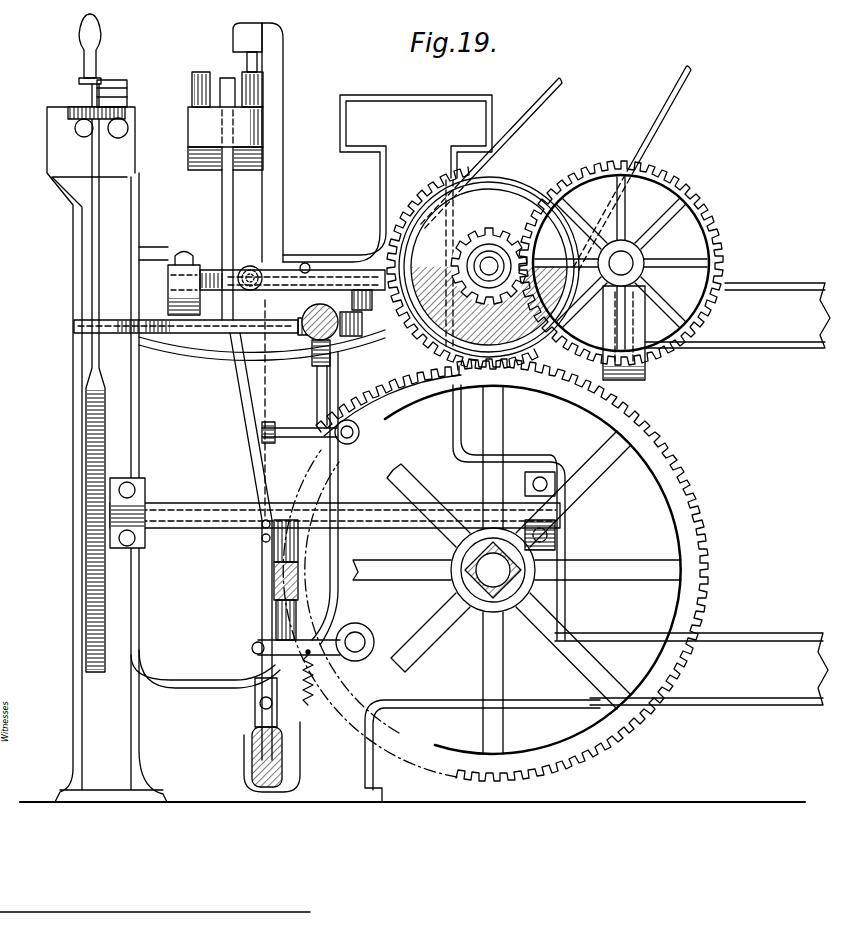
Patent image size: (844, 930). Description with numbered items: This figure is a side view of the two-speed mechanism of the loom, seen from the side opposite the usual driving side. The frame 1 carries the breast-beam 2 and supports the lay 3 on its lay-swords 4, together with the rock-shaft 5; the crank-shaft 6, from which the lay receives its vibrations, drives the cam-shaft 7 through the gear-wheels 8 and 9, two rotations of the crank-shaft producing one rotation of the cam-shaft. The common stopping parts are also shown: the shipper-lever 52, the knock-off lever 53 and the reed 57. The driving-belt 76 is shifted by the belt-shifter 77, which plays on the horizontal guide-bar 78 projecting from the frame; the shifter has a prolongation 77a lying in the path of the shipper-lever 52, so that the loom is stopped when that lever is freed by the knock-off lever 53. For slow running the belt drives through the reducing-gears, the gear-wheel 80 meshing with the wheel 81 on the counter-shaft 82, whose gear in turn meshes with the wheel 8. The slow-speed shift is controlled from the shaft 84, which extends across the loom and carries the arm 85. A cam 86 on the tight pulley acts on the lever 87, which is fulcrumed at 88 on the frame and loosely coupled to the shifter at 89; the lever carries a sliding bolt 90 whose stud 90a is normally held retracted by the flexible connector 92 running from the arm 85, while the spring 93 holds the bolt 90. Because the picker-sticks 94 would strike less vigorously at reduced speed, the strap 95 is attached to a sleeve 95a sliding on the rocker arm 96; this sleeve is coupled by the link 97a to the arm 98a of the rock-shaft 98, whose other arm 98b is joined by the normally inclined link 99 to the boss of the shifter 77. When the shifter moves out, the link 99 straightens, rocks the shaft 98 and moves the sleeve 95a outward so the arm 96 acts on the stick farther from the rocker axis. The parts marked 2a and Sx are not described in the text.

The frame 1 is at (400, 96).
The breast-beam 2 is at (47, 133).
The collar 2a is at (80, 110).
The lay 3 is at (225, 138).
The lay-swords 4 is at (284, 192).
The rock-shaft 5 is at (296, 776).
The crank-shaft 6 is at (489, 266).
The cam-shaft 7 is at (493, 570).
The gear-wheel 8 is at (530, 171).
The gear-wheel 9 is at (705, 530).
The shipper-lever 52 is at (80, 50).
The knock-off lever 53 is at (128, 120).
The reed 57 is at (247, 60).
The slide Sx is at (194, 72).
The driving-belt 76 is at (662, 128).
The belt-shifter 77 is at (428, 200).
The prolongation 77a is at (74, 326).
The guide-bar 78 is at (310, 314).
The gear-wheel 80 is at (492, 232).
The wheel 81 is at (720, 230).
The counter-shaft 82 is at (628, 260).
The shaft 84 is at (358, 638).
The arm 85 is at (300, 640).
The cam 86 is at (430, 385).
The lever 87 is at (340, 268).
The fulcrum 88 is at (362, 334).
The coupling 89 is at (184, 252).
The bolt 90 is at (422, 303).
The stud 90a is at (305, 263).
The flexible connector 92 is at (256, 266).
The spring 93 is at (315, 680).
The picker-sticks 94 is at (223, 202).
The strap 95 is at (292, 578).
The sleeve 95a is at (288, 612).
The arm 96 is at (298, 548).
The link 97a is at (262, 490).
The rock-shaft 98 is at (358, 438).
The arm 98a is at (262, 432).
The arm 98b is at (305, 428).
The link 99 is at (330, 395).